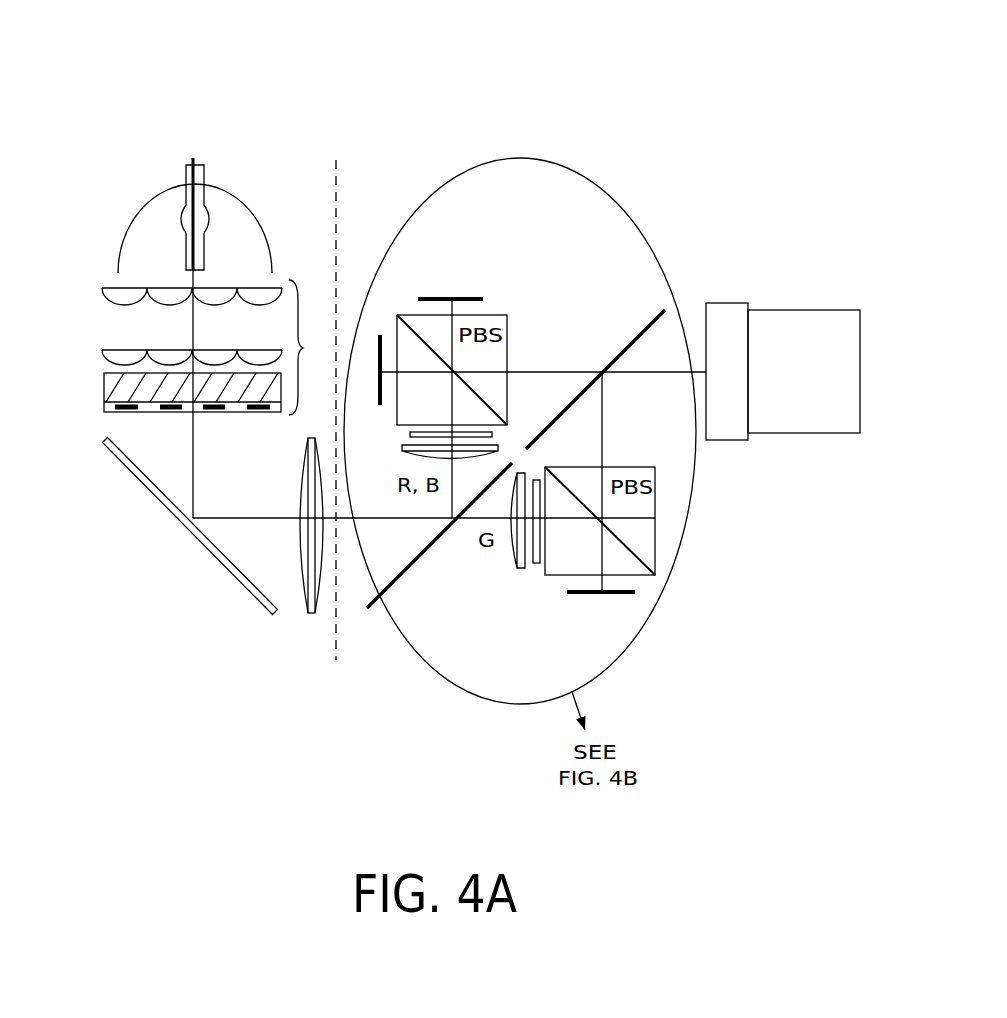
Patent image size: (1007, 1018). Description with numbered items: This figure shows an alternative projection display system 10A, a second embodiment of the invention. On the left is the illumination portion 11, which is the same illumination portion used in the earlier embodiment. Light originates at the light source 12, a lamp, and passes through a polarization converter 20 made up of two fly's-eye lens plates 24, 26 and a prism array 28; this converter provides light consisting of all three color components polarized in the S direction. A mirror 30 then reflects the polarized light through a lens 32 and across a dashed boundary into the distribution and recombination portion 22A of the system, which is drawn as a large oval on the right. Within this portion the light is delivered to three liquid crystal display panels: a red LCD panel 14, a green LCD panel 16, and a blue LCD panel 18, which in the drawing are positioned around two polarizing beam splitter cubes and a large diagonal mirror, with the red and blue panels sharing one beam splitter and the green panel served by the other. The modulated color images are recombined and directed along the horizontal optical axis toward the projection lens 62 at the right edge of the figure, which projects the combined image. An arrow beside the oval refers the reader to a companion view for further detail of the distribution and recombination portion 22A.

The projection display system 10A is at (155, 73).
The light source 12 is at (165, 203).
The fly's-eye lens plate 24 is at (105, 288).
The fly's-eye lens plate 26 is at (105, 350).
The prism array 28 is at (103, 397).
The polarization converter 20 is at (302, 346).
The mirror 30 is at (103, 447).
The illumination portion 11 is at (82, 515).
The lens 32 is at (312, 615).
The red LCD panel 14 is at (351, 365).
The blue LCD panel 18 is at (450, 272).
The green LCD panel 16 is at (601, 618).
The projection lens 62 is at (783, 330).
The distribution and recombination portion 22A is at (678, 617).